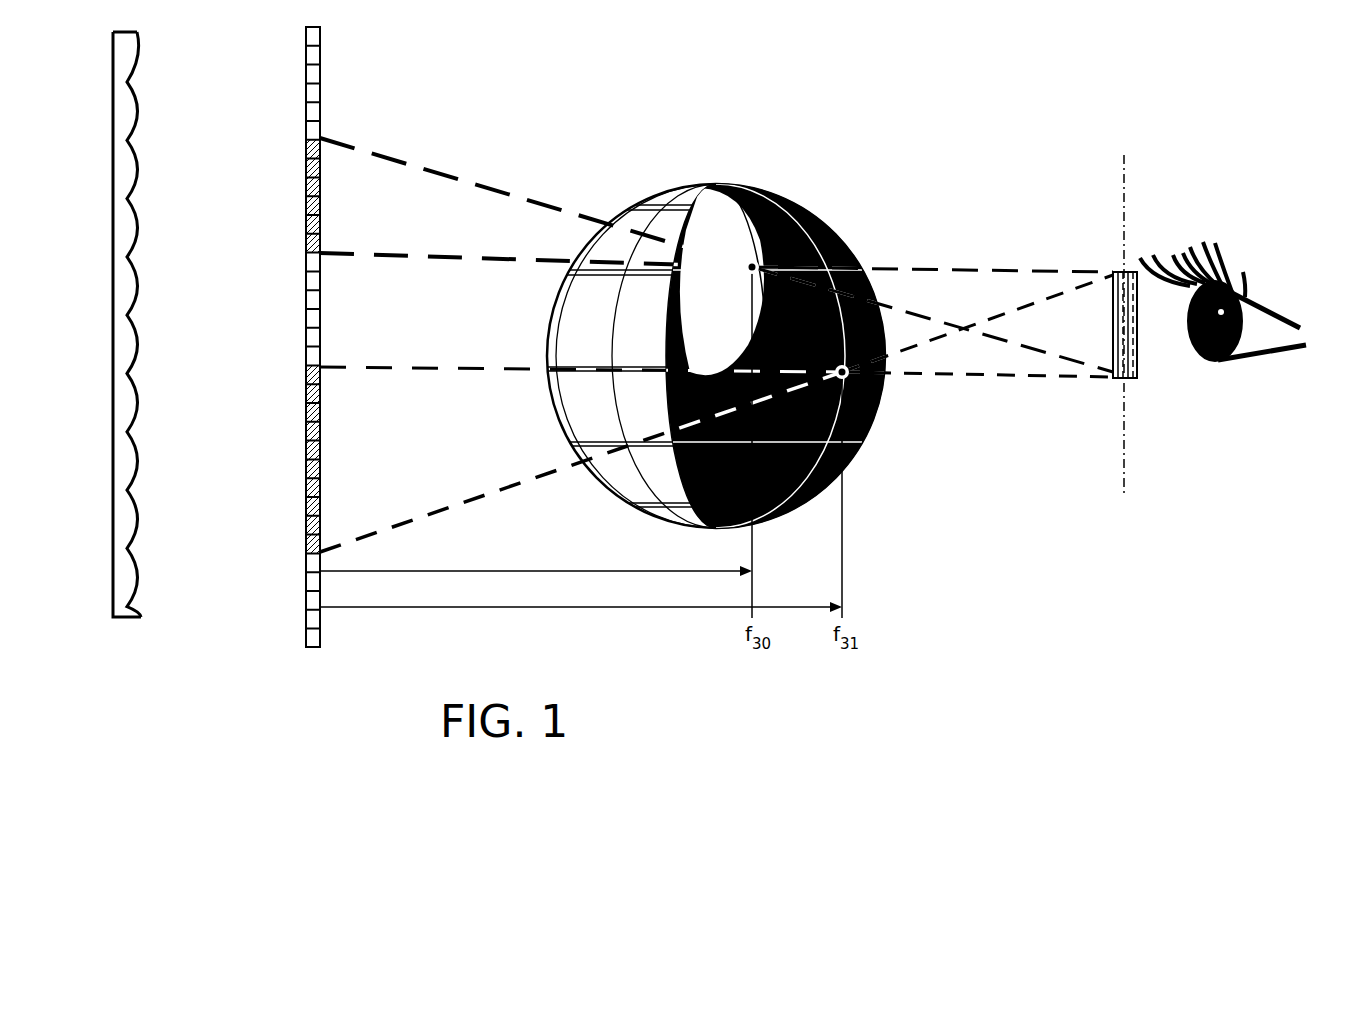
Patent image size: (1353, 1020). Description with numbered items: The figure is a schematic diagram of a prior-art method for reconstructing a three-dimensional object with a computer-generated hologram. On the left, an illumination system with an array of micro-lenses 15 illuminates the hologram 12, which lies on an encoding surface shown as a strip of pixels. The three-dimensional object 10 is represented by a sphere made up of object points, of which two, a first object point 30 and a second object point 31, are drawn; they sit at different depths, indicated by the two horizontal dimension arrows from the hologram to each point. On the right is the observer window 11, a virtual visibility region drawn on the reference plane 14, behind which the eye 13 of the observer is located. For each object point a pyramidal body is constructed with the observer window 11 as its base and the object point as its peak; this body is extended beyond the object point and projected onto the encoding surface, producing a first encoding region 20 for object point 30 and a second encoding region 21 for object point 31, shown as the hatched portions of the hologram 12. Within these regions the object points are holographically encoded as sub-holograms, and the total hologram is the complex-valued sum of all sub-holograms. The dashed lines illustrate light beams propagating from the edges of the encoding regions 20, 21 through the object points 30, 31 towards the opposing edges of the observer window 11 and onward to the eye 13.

The object 10 is at (666, 174).
The observer window 11 is at (1135, 380).
The hologram 12 is at (320, 72).
The eye 13 is at (1218, 364).
The reference plane 14 is at (1127, 197).
The array of micro-lenses 15 is at (127, 578).
The first encoding region of the encoding surface 20 is at (320, 205).
The second encoding region of the encoding surface 21 is at (320, 465).
The first object point 30 is at (753, 262).
The second object point 31 is at (858, 447).